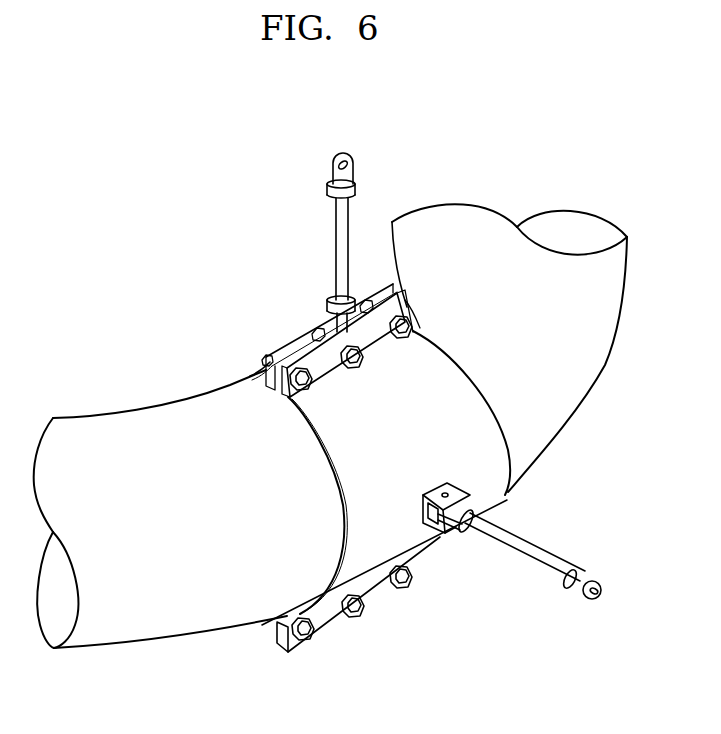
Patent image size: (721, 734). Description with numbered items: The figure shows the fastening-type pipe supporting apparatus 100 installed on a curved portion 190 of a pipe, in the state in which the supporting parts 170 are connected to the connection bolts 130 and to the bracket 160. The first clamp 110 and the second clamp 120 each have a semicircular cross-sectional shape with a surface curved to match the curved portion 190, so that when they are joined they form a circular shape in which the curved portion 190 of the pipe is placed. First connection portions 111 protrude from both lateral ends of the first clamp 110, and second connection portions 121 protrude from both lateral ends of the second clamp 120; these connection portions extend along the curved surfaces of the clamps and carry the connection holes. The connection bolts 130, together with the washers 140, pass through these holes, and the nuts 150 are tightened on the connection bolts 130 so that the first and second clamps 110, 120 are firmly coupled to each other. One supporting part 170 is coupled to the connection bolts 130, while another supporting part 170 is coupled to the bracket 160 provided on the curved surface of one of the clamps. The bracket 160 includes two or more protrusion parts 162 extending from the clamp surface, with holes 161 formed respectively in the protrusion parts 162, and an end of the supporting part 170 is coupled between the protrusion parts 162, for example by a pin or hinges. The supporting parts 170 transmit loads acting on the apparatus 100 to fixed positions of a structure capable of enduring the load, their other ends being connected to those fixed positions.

The fastening-type pipe supporting apparatus 100 is at (210, 296).
The first clamp 110 is at (492, 478).
The first connection portions 111 is at (317, 336).
The second clamp 120 is at (250, 376).
The second connection portions 121 is at (297, 355).
The connection bolts 130 is at (415, 315).
The washers 140 is at (403, 300).
The nuts 150 is at (363, 298).
The bracket 160 is at (433, 572).
The holes 161 is at (423, 495).
The protrusion parts 162 is at (440, 536).
The supporting parts 170 is at (338, 242).
The curved portion 190 is at (587, 343).